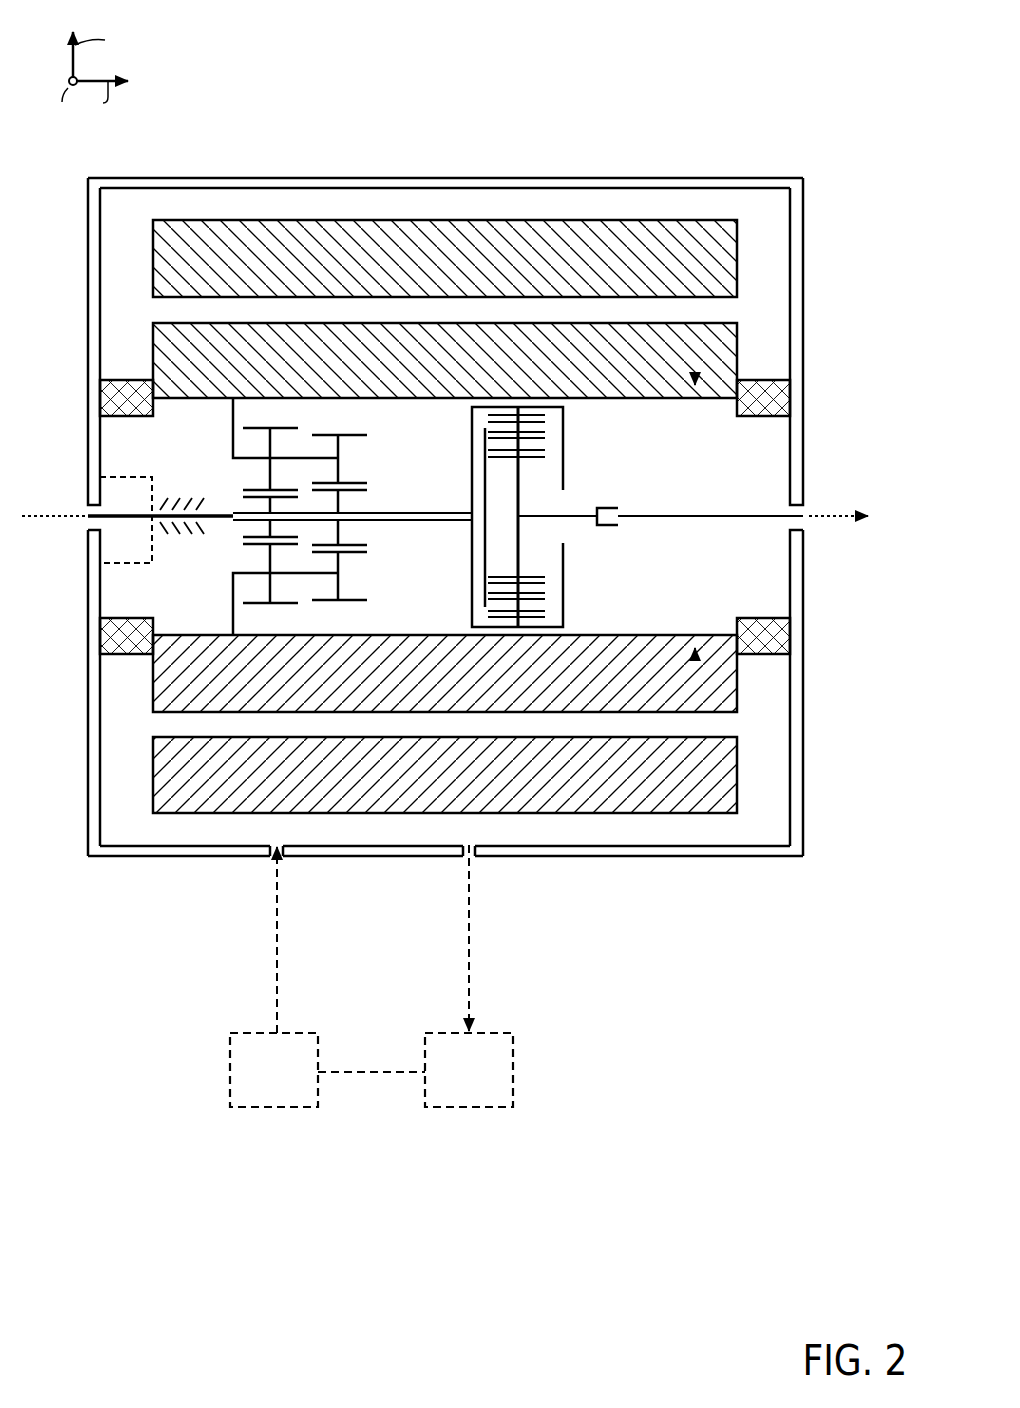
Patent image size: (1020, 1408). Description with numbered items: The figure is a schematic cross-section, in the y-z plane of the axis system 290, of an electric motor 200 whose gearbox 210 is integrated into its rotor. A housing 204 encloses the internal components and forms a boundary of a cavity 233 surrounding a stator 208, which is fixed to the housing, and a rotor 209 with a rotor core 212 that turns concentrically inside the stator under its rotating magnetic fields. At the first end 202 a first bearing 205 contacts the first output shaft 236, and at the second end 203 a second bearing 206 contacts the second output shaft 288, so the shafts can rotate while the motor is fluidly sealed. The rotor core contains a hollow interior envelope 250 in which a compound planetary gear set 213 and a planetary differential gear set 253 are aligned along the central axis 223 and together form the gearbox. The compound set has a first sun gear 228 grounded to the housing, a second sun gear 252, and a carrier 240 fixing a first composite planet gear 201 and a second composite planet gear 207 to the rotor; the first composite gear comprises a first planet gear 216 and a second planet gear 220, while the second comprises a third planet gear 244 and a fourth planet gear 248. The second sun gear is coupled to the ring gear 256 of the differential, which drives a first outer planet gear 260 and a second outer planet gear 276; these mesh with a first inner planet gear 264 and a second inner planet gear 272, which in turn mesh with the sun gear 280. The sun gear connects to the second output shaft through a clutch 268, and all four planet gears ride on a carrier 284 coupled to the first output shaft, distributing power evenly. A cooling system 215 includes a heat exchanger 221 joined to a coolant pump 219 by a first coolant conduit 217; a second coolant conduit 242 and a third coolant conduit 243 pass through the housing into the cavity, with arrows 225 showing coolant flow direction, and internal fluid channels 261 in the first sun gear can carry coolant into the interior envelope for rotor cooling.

The electric motor 200 is at (757, 100).
The first composite planet gear 201 is at (217, 452).
The first end 202 is at (72, 418).
The second end 203 is at (807, 468).
The housing 204 is at (343, 178).
The first bearing 205 is at (99, 634).
The second bearing 206 is at (790, 633).
The second composite planet gear 207 is at (225, 578).
The stator 208 is at (497, 210).
The rotor 209 is at (155, 318).
The gearbox 210 is at (730, 600).
The rotor core 212 is at (735, 323).
The compound planetary gear set 213 is at (385, 475).
The cooling system 215 is at (340, 1150).
The first planet gear 216 is at (246, 427).
The first coolant conduit 217 is at (362, 1075).
The coolant pump 219 is at (230, 1056).
The second planet gear 220 is at (348, 435).
The heat exchanger 221 is at (513, 1068).
The central axis 223 is at (73, 516).
The arrows 225 is at (469, 930).
The first sun gear 228 is at (222, 512).
The cavity 233 is at (703, 838).
The first output shaft 236 is at (122, 520).
The carrier 240 is at (232, 426).
The second coolant conduit 242 is at (277, 858).
The third coolant conduit 243 is at (469, 858).
The third planet gear 244 is at (246, 605).
The fourth planet gear 248 is at (327, 602).
The interior envelope 250 is at (695, 372).
The second sun gear 252 is at (380, 511).
The planetary differential gear set 253 is at (630, 470).
The ring gear 256 is at (471, 480).
The first outer planet gear 260 is at (545, 415).
The internal fluid channels 261 is at (110, 478).
The first inner planet gear 264 is at (545, 441).
The clutch 268 is at (575, 518).
The second inner planet gear 272 is at (545, 578).
The second outer planet gear 276 is at (545, 604).
The sun gear 280 is at (519, 491).
The carrier 284 is at (485, 555).
The second output shaft 288 is at (668, 516).
The axis system 290 is at (55, 44).